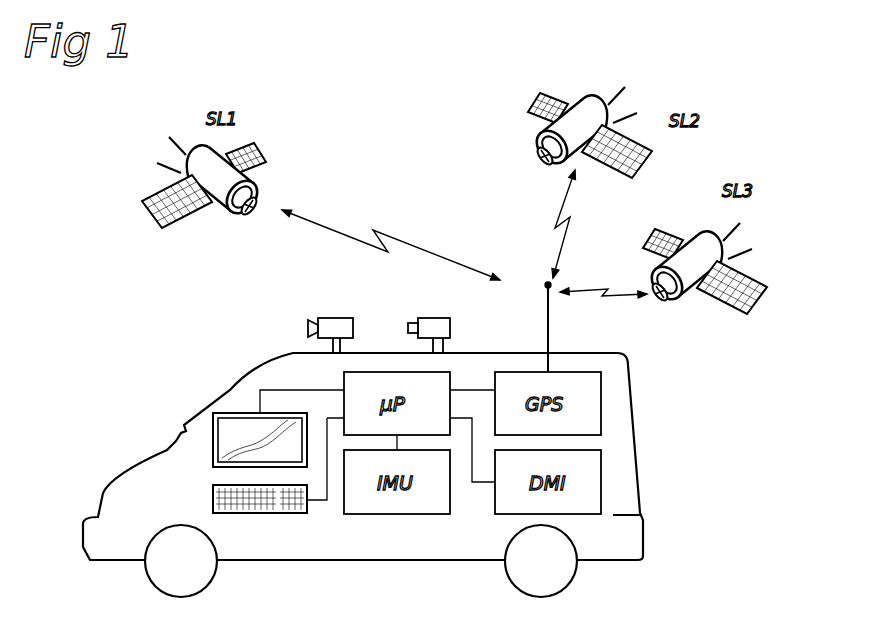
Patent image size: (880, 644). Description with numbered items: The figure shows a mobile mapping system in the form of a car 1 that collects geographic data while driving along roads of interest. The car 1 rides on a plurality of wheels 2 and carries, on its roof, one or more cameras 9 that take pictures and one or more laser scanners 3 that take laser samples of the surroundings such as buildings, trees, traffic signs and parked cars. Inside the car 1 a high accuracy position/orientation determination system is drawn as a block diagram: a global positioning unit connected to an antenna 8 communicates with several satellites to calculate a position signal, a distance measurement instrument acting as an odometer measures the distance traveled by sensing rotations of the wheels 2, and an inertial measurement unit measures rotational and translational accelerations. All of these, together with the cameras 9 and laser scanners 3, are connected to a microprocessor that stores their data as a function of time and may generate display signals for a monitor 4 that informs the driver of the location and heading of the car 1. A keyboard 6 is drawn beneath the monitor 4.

The car 1 is at (142, 480).
The wheels 2 is at (170, 573).
The laser scanner 3 is at (444, 315).
The monitor 4 is at (237, 430).
The keyboard 6 is at (217, 497).
The antenna 8 is at (548, 320).
The camera 9 is at (344, 315).